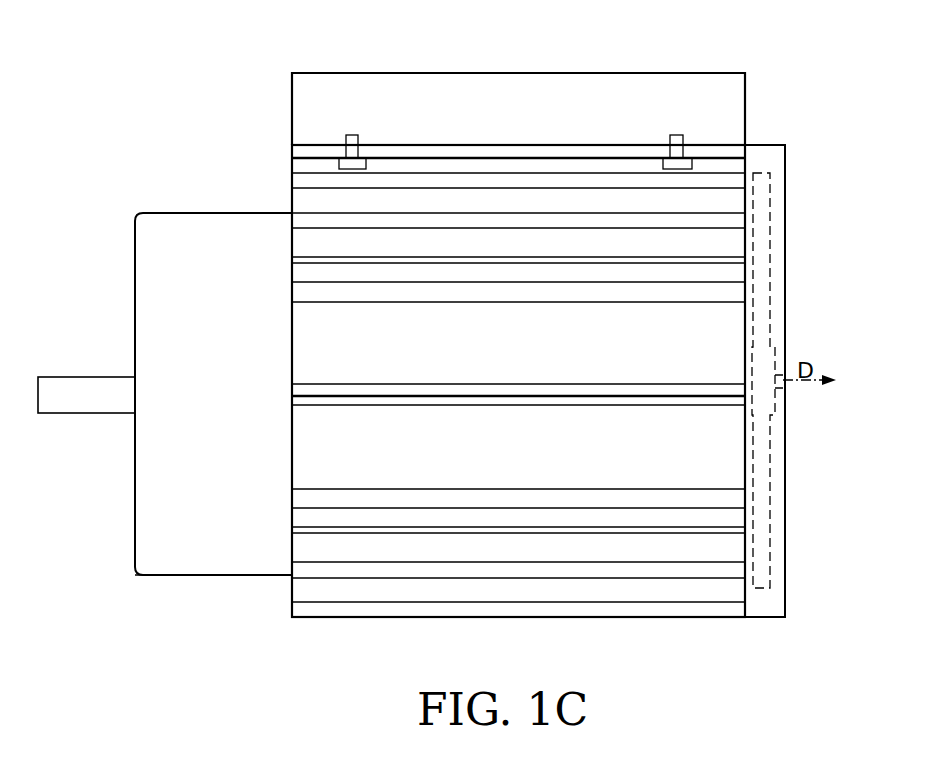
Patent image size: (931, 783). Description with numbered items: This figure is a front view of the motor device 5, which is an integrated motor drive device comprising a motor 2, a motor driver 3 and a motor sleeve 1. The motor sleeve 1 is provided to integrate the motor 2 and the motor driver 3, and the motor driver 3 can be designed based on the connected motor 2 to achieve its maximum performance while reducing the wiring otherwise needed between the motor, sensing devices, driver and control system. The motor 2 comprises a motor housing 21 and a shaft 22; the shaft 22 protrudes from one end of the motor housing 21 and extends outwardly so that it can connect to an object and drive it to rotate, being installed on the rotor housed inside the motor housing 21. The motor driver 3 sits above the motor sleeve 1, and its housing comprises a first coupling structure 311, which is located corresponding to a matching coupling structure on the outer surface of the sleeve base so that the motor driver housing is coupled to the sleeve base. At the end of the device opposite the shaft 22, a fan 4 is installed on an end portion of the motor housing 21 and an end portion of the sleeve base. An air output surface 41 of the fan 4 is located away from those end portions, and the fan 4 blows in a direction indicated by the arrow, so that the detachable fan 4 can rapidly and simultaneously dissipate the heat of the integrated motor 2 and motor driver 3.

The motor sleeve 1 is at (670, 588).
The motor 2 is at (138, 270).
The motor housing 21 is at (207, 562).
The shaft 22 is at (91, 397).
The motor driver 3 is at (708, 82).
The first coupling structure 311 is at (668, 146).
The fan 4 is at (783, 148).
The air output surface 41 is at (786, 219).
The motor device 5 is at (157, 43).